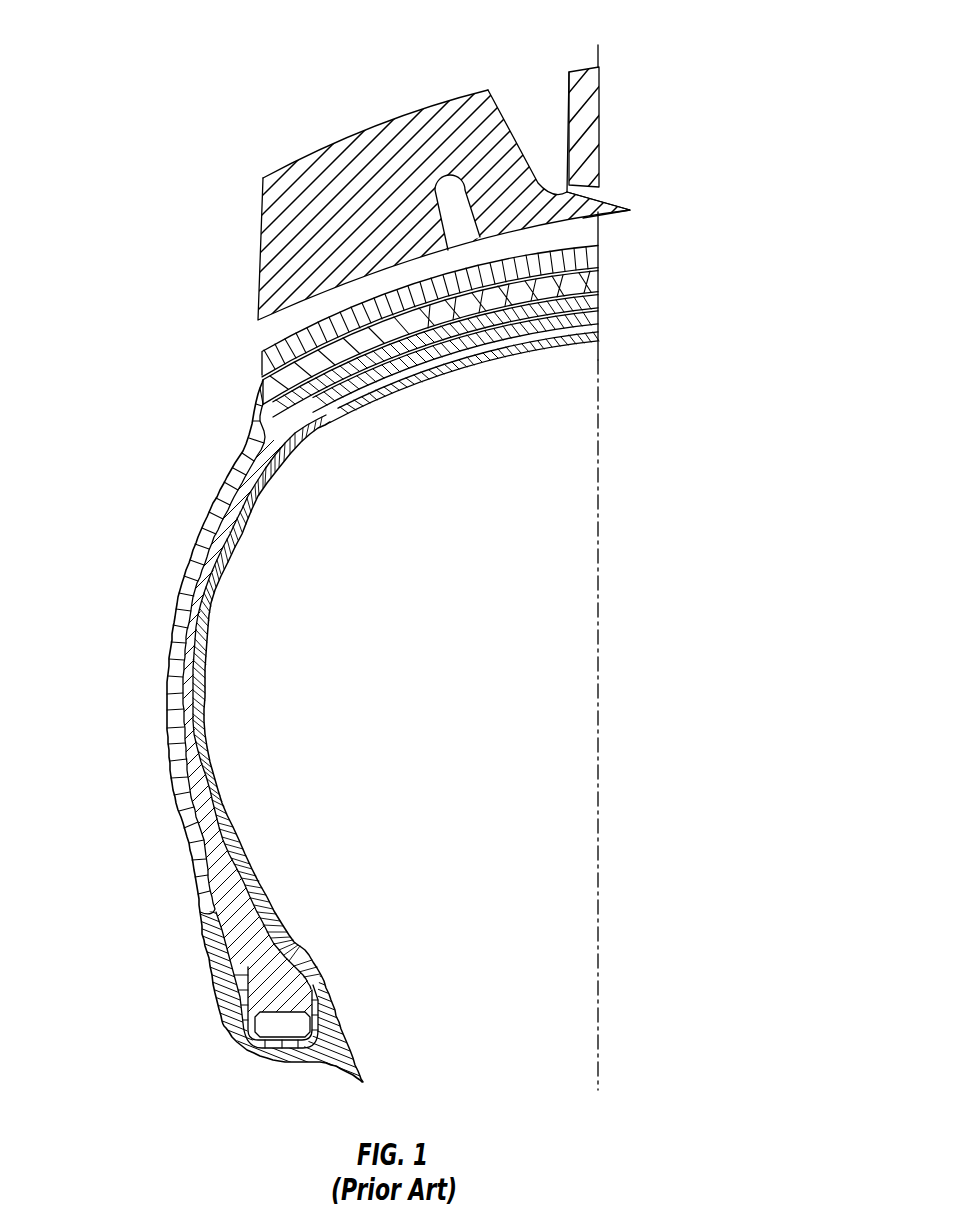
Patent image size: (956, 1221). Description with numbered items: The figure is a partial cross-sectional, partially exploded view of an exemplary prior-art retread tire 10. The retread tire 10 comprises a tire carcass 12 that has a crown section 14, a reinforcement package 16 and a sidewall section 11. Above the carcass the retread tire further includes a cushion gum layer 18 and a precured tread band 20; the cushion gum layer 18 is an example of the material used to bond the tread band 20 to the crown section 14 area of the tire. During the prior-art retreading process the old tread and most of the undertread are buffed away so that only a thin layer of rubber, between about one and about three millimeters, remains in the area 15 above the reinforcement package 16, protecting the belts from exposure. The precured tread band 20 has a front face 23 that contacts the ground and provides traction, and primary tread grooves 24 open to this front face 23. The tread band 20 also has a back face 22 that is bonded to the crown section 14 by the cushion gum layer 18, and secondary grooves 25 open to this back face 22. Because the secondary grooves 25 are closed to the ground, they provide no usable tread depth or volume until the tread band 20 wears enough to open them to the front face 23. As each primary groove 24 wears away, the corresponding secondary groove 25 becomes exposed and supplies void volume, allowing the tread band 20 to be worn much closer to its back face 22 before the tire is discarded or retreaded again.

The retread tire 10 is at (132, 296).
The sidewall section 11 is at (175, 695).
The tire carcass 12 is at (190, 558).
The crown section 14 is at (480, 328).
The area above the reinforcement package 15 is at (593, 284).
The reinforcement package 16 is at (397, 360).
The cushion gum layer 18 is at (258, 360).
The precured tread band 20 is at (246, 270).
The back face 22 is at (586, 220).
The front face 23 is at (457, 92).
The primary tread groove 24 is at (530, 103).
The secondary groove 25 is at (447, 193).